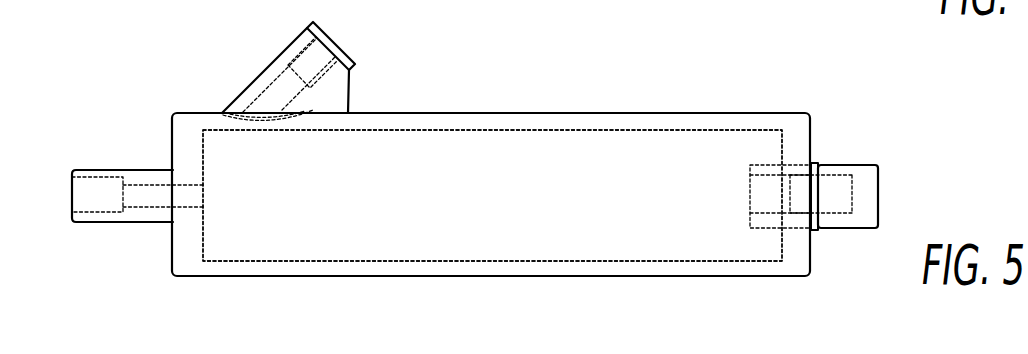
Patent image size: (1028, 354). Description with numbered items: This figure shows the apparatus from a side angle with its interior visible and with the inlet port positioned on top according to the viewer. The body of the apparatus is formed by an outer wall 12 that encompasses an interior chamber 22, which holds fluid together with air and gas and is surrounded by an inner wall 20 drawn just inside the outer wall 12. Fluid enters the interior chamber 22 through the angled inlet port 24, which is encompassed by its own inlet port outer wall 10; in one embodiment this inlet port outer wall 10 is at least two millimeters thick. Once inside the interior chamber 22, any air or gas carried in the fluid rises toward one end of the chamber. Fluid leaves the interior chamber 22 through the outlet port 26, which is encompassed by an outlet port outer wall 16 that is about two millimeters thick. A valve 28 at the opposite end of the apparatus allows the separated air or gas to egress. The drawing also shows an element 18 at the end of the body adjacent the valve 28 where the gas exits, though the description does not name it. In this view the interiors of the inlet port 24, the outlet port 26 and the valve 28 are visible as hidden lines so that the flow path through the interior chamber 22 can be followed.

The inlet port outer wall 10 is at (270, 65).
The outer wall 12 is at (487, 175).
The outlet port outer wall 16 is at (123, 170).
The outlet fitting 18 is at (840, 162).
The inner wall 20 is at (408, 130).
The interior chamber 22 is at (566, 197).
The inlet port 24 is at (344, 37).
The outlet port 26 is at (94, 197).
The valve 28 is at (840, 200).